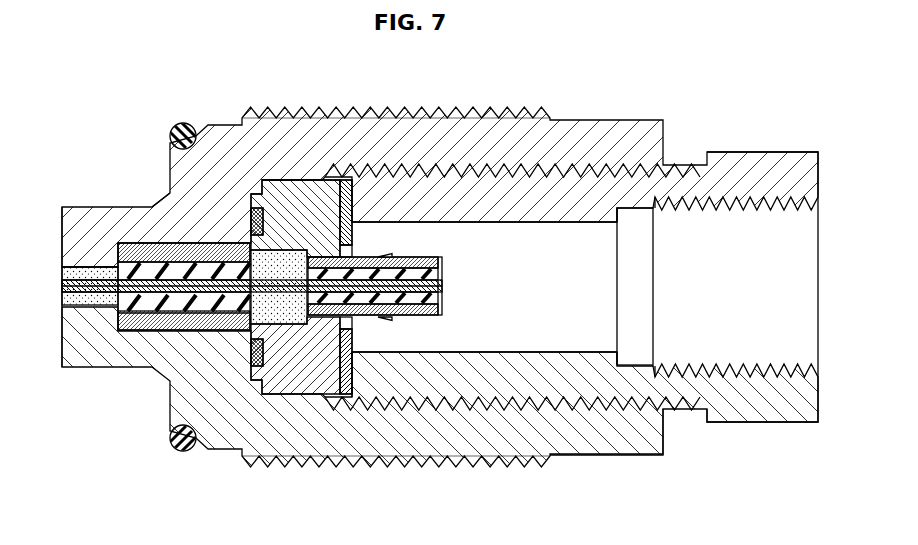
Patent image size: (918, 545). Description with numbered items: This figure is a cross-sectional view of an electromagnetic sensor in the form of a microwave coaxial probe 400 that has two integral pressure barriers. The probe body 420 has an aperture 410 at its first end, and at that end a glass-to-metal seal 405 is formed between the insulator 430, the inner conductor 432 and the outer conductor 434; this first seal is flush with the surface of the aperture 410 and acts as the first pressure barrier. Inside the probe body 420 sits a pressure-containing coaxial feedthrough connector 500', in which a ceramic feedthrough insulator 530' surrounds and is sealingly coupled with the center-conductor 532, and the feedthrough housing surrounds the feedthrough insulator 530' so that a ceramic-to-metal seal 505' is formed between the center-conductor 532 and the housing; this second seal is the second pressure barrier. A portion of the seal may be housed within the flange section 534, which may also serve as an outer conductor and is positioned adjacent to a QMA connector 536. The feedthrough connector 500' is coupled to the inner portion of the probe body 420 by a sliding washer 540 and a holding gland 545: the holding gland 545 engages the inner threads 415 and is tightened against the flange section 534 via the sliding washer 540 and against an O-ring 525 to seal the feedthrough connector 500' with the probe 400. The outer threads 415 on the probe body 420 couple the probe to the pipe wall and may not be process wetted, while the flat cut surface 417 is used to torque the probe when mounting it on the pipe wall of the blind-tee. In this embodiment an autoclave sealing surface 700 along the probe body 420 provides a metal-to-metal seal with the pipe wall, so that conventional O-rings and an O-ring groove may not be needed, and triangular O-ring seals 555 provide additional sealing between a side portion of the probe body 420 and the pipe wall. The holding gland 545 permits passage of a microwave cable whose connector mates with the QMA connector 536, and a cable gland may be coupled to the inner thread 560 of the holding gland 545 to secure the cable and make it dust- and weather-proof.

The microwave coaxial probe 400 is at (146, 119).
The glass-to-metal seal 405 is at (93, 256).
The aperture 410 is at (56, 278).
The threads 415 is at (466, 159).
The surface 417 is at (602, 456).
The probe body 420 is at (458, 442).
The insulator 430 is at (105, 304).
The inner conductor 432 is at (88, 294).
The outer conductor 434 is at (122, 207).
The coaxial feedthrough connector 500' is at (280, 204).
The ceramic-to-metal seal 505' is at (279, 380).
The O-ring 525 is at (250, 346).
The feedthrough insulator 530' is at (301, 228).
The center-conductor 532 is at (295, 300).
The flange section 534 is at (326, 230).
The QMA connector 536 is at (455, 278).
The sliding washer 540 is at (353, 195).
The holding gland 545 is at (757, 152).
The triangular O-ring seal 555 is at (178, 448).
The inner thread 560 is at (735, 219).
The autoclave sealing surface 700 is at (167, 371).